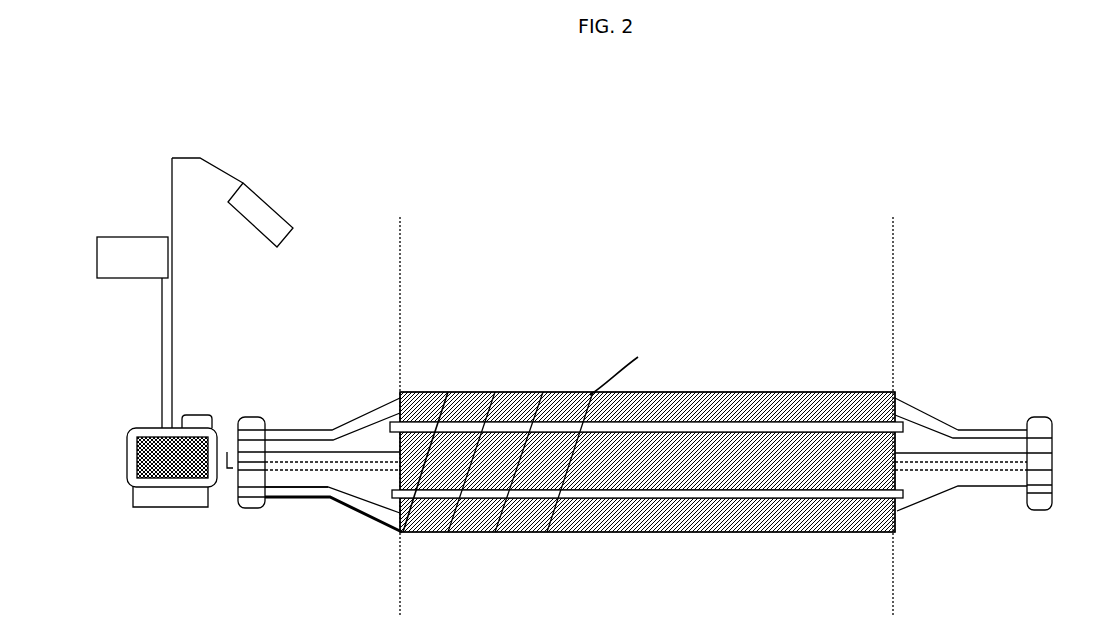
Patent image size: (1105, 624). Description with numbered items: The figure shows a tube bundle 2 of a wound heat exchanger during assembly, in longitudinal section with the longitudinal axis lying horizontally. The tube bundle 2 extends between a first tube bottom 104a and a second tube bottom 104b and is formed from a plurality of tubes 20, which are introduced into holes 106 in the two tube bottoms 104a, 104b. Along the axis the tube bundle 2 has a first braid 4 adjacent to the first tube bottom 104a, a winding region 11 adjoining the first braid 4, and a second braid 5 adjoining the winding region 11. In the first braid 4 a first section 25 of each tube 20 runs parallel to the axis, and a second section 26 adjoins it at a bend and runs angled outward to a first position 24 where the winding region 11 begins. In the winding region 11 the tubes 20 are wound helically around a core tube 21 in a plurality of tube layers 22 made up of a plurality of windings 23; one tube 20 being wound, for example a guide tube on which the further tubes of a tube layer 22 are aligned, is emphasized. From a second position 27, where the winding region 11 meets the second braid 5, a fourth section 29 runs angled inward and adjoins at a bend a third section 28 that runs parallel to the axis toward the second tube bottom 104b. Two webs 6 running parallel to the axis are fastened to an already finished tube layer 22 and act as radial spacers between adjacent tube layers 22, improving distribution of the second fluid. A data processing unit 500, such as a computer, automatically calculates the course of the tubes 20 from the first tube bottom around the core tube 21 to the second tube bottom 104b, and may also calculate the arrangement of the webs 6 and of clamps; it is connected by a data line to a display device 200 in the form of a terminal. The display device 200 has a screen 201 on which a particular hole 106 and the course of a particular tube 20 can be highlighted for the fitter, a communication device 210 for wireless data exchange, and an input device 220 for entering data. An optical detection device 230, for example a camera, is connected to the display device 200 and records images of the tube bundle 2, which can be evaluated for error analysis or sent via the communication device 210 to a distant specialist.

The tube bundle 2 is at (628, 335).
The first braid 4 is at (345, 397).
The second braid 5 is at (982, 382).
The web 6 is at (646, 412).
The winding region 11 is at (547, 352).
The tube 20 is at (335, 428).
The core tube 21 is at (942, 452).
The tube layer 22 is at (710, 393).
The winding 23 is at (447, 392).
The first position 24 is at (398, 532).
The first section 25 is at (288, 500).
The second section 26 is at (365, 517).
The second position 27 is at (897, 392).
The third section 28 is at (995, 428).
The fourth section 29 is at (920, 407).
The first tube bottom 104a is at (255, 508).
The second tube bottom 104b is at (1037, 512).
The hole 106 is at (242, 498).
The display device 200 is at (148, 426).
The screen 201 is at (137, 460).
The communication device 210 is at (195, 414).
The input device 220 is at (157, 508).
The optical detection device 230 is at (281, 200).
The data processing unit 500 is at (149, 269).